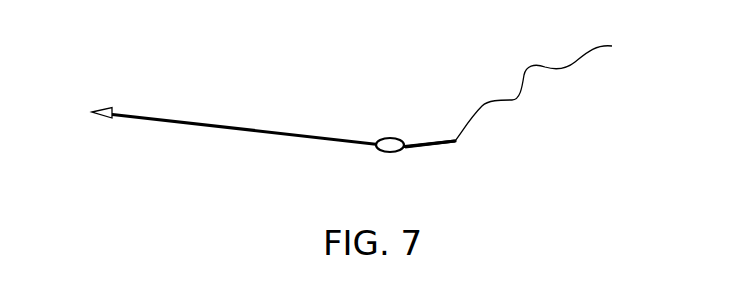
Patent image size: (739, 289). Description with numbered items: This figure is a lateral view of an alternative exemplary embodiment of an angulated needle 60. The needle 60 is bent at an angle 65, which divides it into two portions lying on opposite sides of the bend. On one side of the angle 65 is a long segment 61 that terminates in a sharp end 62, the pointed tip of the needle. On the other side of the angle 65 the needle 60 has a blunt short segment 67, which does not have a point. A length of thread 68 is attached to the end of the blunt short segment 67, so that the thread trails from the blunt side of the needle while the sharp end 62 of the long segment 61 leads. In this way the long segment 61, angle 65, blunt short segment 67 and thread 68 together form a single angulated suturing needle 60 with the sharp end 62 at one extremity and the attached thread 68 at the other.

The angulated needle 60 is at (178, 168).
The long segment 61 is at (227, 129).
The sharp end 62 is at (107, 108).
The angle 65 is at (392, 136).
The blunt short segment 67 is at (428, 149).
The thread 68 is at (522, 68).